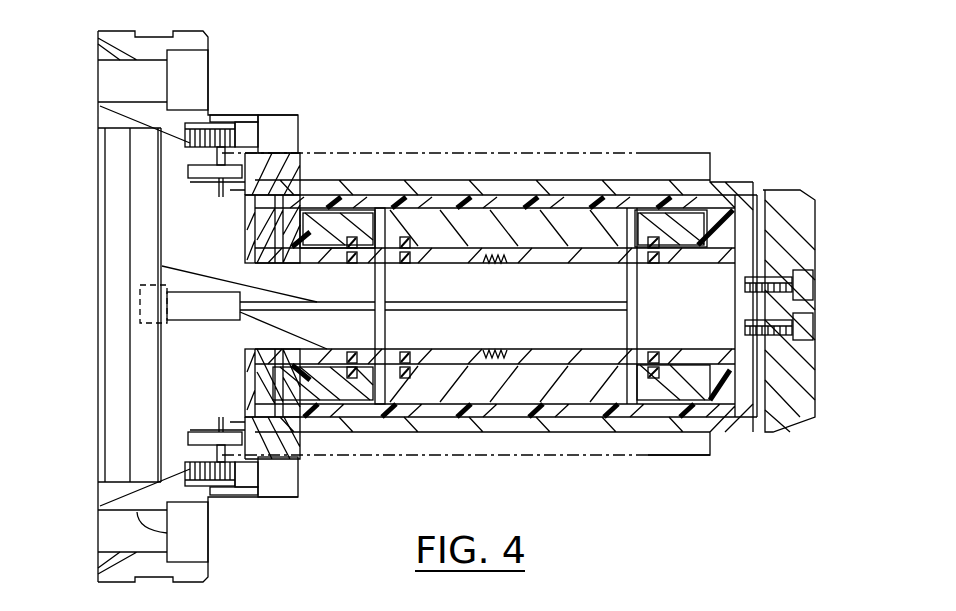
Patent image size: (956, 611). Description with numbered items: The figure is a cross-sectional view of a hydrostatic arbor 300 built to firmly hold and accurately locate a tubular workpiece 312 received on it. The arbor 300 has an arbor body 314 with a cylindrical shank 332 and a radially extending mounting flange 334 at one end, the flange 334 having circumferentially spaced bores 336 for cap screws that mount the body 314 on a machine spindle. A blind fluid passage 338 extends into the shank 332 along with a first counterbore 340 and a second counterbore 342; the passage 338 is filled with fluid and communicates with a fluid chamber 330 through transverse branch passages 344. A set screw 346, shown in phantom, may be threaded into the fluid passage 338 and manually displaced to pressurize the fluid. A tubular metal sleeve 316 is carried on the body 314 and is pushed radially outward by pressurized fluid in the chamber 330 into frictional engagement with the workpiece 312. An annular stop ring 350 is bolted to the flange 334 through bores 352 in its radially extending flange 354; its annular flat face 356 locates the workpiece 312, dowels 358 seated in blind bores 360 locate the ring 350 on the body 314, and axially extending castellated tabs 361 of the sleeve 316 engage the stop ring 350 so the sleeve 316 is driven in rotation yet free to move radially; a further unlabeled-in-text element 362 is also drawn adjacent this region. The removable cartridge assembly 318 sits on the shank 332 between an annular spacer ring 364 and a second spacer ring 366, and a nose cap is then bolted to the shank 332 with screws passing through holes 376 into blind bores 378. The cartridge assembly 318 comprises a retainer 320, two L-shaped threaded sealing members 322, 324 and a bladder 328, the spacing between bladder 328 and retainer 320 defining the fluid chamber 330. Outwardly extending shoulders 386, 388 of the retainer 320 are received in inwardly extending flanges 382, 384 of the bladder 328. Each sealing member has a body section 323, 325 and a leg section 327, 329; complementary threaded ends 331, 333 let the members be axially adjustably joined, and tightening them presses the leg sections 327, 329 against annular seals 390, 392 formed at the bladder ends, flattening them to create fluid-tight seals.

The hydrostatic arbor 300 is at (680, 57).
The tubular workpiece 312 is at (598, 447).
The arbor body 314 is at (153, 386).
The tubular metal sleeve 316 is at (697, 433).
The removable cartridge assembly 318 is at (687, 190).
The retainer 320 is at (513, 220).
The threaded sealing member 322 is at (448, 247).
The body section 323 is at (443, 280).
The threaded sealing member 324 is at (557, 245).
The body section 325 is at (553, 262).
The leg section 327 is at (250, 258).
The bladder 328 is at (620, 200).
The leg section 329 is at (758, 193).
The fluid chamber 330 is at (385, 212).
The threaded end 331 is at (492, 215).
The cylindrical shank 332 is at (652, 310).
The threaded end 333 is at (503, 268).
The mounting flange 334 is at (130, 31).
The bores 336 is at (207, 532).
The fluid passage 338 is at (482, 352).
The first counterbore 340 is at (193, 305).
The second counterbore 342 is at (143, 115).
The branch passages 344 is at (377, 287).
The set screw 346 is at (148, 313).
The annular stop ring 350 is at (262, 112).
The bores 352 is at (218, 135).
The radially extending flange 354 is at (257, 495).
The annular flat face 356 is at (303, 440).
The dowel 358 is at (215, 185).
The blind bores 360 is at (163, 216).
The tabs 361 is at (290, 195).
The seal retainer 362 is at (278, 158).
The annular spacer ring 364 is at (270, 237).
The second spacer ring 366 is at (760, 227).
The holes 376 is at (800, 268).
The blind bores 378 is at (745, 280).
The inwardly extending flange 382 is at (300, 232).
The inwardly extending flange 384 is at (713, 303).
The outwardly extending shoulder 386 is at (307, 222).
The outwardly extending shoulder 388 is at (698, 225).
The annular seal 390 is at (262, 224).
The annular seal 392 is at (740, 223).